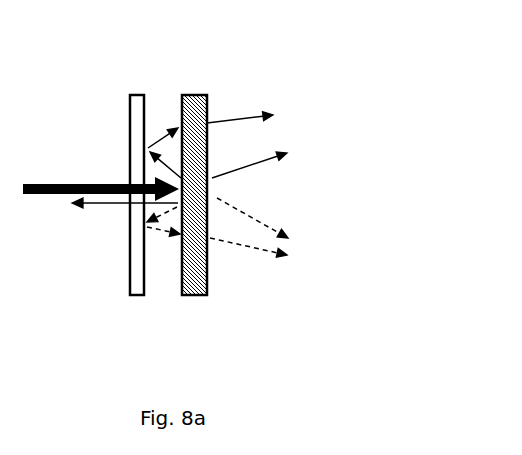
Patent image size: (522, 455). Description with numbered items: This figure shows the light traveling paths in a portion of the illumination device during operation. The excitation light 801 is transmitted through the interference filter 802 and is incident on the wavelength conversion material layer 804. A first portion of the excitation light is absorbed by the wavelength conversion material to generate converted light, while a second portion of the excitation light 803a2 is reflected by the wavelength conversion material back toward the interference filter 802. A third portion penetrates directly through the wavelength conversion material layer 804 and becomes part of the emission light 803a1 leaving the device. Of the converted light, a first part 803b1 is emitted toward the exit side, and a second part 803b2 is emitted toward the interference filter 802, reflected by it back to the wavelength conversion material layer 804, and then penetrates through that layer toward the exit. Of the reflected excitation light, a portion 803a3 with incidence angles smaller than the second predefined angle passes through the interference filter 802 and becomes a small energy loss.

The excitation light 801 is at (67, 184).
The interference filter 802 is at (130, 94).
The emission light 803a1 is at (263, 167).
The second portion of the excitation light 803a2 is at (157, 143).
The portion of reflected excitation light with small incidence angles 803a3 is at (100, 203).
The first part of the converted light 803b1 is at (262, 222).
The second part of the converted light 803b2 is at (153, 228).
The wavelength conversion material layer 804 is at (198, 94).